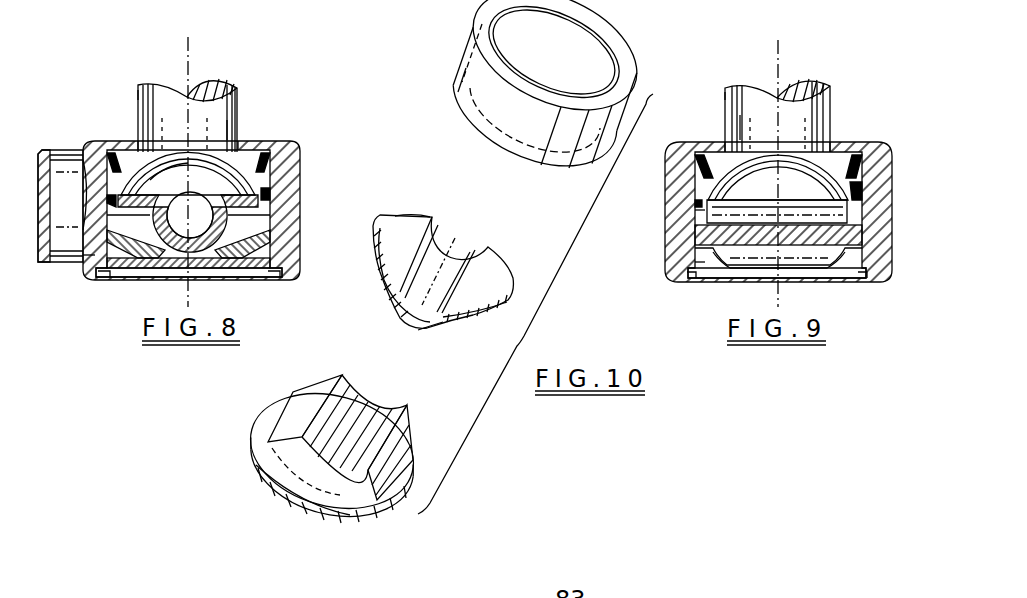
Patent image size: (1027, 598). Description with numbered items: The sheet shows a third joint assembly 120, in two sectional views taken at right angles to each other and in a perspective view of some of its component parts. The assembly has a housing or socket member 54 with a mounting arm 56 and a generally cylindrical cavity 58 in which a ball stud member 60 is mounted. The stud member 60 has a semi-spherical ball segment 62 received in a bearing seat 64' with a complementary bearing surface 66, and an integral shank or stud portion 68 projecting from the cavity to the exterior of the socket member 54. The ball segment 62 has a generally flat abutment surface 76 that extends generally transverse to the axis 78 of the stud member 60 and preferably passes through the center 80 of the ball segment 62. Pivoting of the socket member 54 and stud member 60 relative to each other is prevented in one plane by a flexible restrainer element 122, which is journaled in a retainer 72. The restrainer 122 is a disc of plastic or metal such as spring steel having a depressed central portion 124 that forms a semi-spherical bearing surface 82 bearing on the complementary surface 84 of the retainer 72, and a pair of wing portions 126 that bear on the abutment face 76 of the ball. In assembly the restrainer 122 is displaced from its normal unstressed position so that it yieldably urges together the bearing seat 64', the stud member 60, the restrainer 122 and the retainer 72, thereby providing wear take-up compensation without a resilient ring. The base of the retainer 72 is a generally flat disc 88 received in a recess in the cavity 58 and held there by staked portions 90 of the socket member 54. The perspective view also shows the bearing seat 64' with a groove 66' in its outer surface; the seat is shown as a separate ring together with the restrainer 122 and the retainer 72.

In FIG. 8, the housing or socket member 54 is at (288, 138).
In FIG. 9, the housing or socket member 54 is at (867, 140).
In FIG. 8, the mounting arm 56 is at (55, 148).
In FIG. 8, the cylindrical cavity 58 is at (262, 243).
In FIG. 9, the cylindrical cavity 58 is at (695, 212).
In FIG. 8, the ball stud member 60 is at (244, 101).
In FIG. 9, the ball stud member 60 is at (835, 81).
In FIG. 8, the semi-spherical ball segment 62 is at (238, 187).
In FIG. 9, the semi-spherical ball segment 62 is at (740, 185).
In FIG. 8, the bearing seat 64' is at (237, 178).
In FIG. 9, the bearing seat 64' is at (808, 165).
In FIG. 10, the bearing seat 64' is at (528, 84).
In FIG. 8, the bearing surface 66 is at (102, 155).
In FIG. 10, the seal groove 66' is at (429, 101).
In FIG. 8, the shank or stud portion 68 is at (231, 127).
In FIG. 9, the shank or stud portion 68 is at (740, 118).
In FIG. 8, the retainer 72 is at (167, 251).
In FIG. 9, the retainer 72 is at (738, 258).
In FIG. 10, the retainer 72 is at (309, 374).
In FIG. 8, the abutment surface 76 is at (198, 205).
In FIG. 8, the axis 78 is at (189, 62).
In FIG. 9, the axis 78 is at (778, 60).
In FIG. 8, the center 80 is at (187, 208).
In FIG. 8, the semi-spherical bearing surface 82 is at (88, 263).
In FIG. 9, the semi-spherical bearing surface 82 is at (695, 260).
In FIG. 10, the semi-spherical bearing surface 82 is at (421, 331).
In FIG. 8, the complimentary surface 84 is at (196, 241).
In FIG. 9, the complimentary surface 84 is at (767, 240).
In FIG. 10, the complimentary surface 84 is at (355, 423).
In FIG. 8, the flat disc 88 is at (247, 271).
In FIG. 9, the flat disc 88 is at (836, 276).
In FIG. 10, the flat disc 88 is at (270, 450).
In FIG. 8, the staked portions 90 is at (268, 281).
In FIG. 9, the staked portions 90 is at (853, 283).
In FIG. 8, the third joint assembly 120 is at (137, 84).
In FIG. 9, the third joint assembly 120 is at (719, 106).
In FIG. 8, the flexible restrainer element 122 is at (252, 216).
In FIG. 9, the flexible restrainer element 122 is at (855, 223).
In FIG. 10, the flexible restrainer element 122 is at (514, 257).
In FIG. 10, the depressed central portion 124 is at (442, 258).
In FIG. 10, the wing portions 126 is at (412, 220).